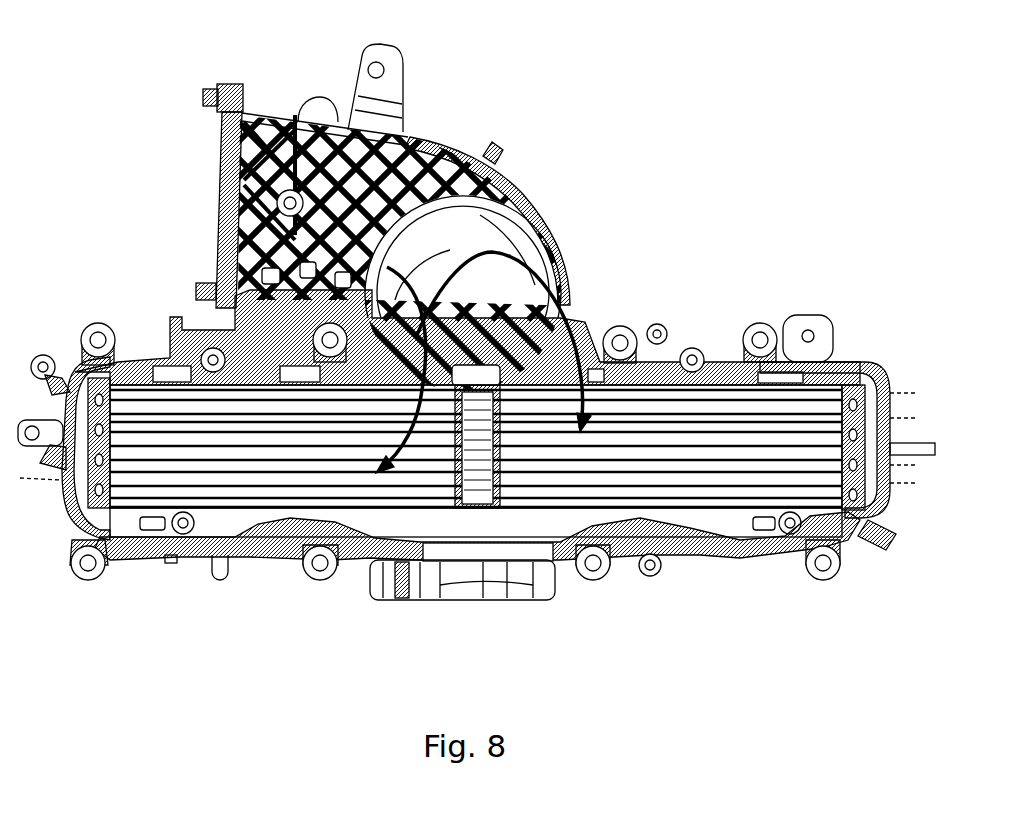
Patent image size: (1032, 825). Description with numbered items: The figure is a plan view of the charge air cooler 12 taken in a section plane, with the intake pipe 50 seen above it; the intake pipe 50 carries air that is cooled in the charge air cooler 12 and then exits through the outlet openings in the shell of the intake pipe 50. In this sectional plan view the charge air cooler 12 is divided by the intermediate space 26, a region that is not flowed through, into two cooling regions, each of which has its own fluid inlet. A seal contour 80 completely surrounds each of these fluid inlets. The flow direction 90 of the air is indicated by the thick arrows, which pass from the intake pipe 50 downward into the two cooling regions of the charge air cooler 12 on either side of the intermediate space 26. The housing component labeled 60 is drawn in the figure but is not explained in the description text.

The charge air cooler 12 is at (283, 487).
The intermediate space 26 is at (487, 507).
The intake pipe 50 is at (630, 188).
The housing 60 is at (842, 364).
The seal contour 80 is at (200, 508).
The flow direction 90 is at (450, 266).